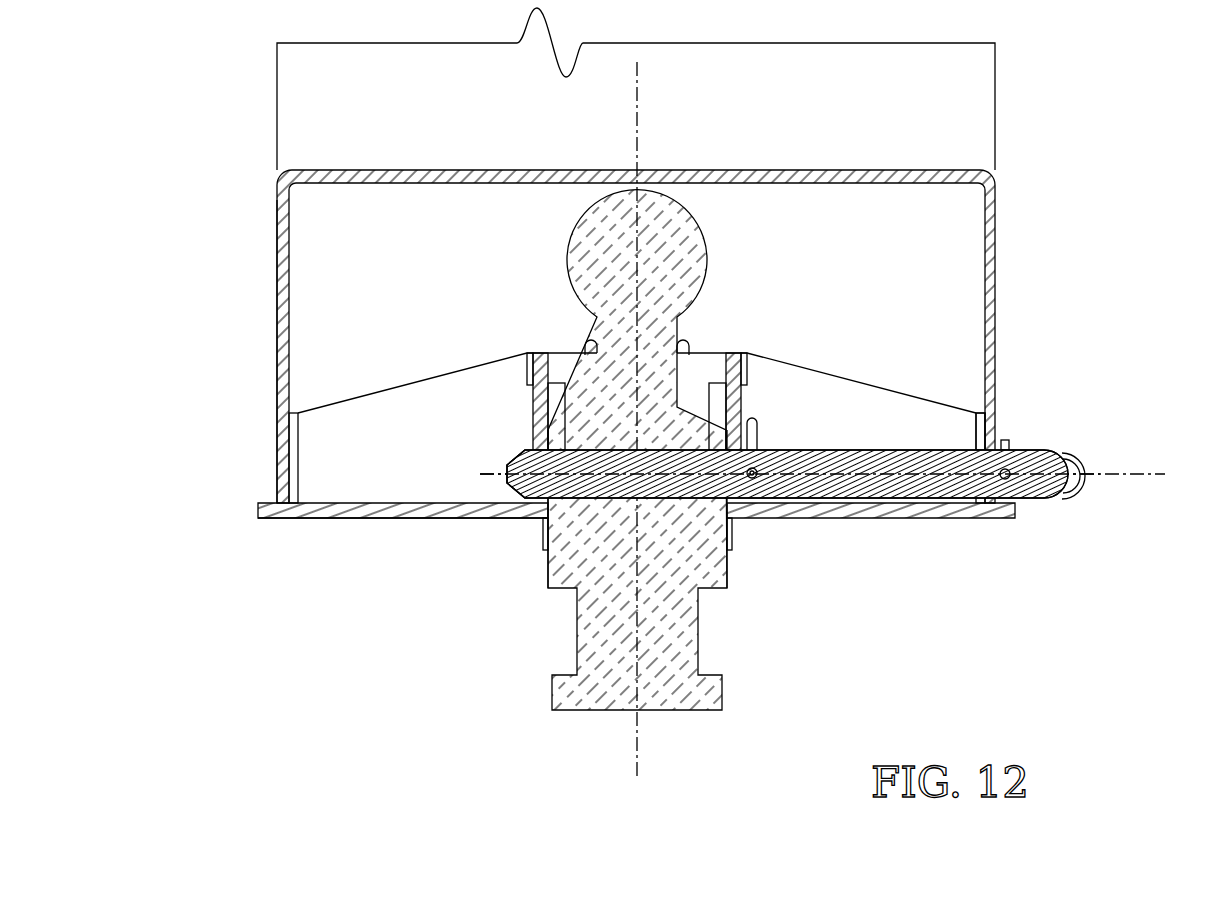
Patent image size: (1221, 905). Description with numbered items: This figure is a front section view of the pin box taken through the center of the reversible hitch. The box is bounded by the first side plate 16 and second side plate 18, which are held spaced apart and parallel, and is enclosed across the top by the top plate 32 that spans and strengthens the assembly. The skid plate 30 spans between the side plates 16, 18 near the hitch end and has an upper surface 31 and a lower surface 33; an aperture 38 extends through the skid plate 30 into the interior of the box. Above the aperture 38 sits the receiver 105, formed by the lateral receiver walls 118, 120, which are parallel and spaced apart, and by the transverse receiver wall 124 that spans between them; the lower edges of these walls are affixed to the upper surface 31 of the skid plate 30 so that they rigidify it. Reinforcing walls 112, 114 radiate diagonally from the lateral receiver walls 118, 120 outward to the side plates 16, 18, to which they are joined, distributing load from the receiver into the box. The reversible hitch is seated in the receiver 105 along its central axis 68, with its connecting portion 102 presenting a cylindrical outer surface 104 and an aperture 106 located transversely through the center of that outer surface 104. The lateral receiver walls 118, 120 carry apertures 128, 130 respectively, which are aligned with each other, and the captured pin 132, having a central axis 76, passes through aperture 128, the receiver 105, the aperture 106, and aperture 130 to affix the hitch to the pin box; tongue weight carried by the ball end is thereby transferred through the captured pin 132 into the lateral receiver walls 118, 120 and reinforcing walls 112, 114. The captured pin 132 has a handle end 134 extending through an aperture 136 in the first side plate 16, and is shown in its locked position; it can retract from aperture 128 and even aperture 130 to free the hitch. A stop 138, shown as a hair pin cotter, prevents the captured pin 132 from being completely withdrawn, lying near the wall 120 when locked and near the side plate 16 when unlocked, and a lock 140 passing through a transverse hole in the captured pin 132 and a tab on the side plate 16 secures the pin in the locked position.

The first side plate 16 is at (990, 233).
The second side plate 18 is at (282, 272).
The skid plate 30 is at (313, 513).
The upper surface 31 is at (356, 503).
The top plate 32 is at (428, 175).
The lower surface 33 is at (347, 522).
The aperture 38 is at (548, 512).
The central axis 68 is at (647, 762).
The central axis 76 is at (1128, 474).
The connecting portion 102 is at (745, 542).
The outer surface 104 is at (548, 568).
The receiver 105 is at (575, 370).
The aperture 106 is at (705, 452).
The reinforcing wall 112 is at (393, 405).
The reinforcing wall 114 is at (907, 412).
The lateral receiver wall 118 is at (530, 391).
The lateral receiver wall 120 is at (745, 388).
The transverse receiver wall 124 is at (688, 362).
The aperture 128 is at (530, 466).
The aperture 130 is at (735, 480).
The captured pin 132 is at (888, 468).
The handle end 134 is at (1073, 483).
The aperture 136 is at (992, 445).
The stop 138 is at (758, 422).
The lock 140 is at (1007, 444).